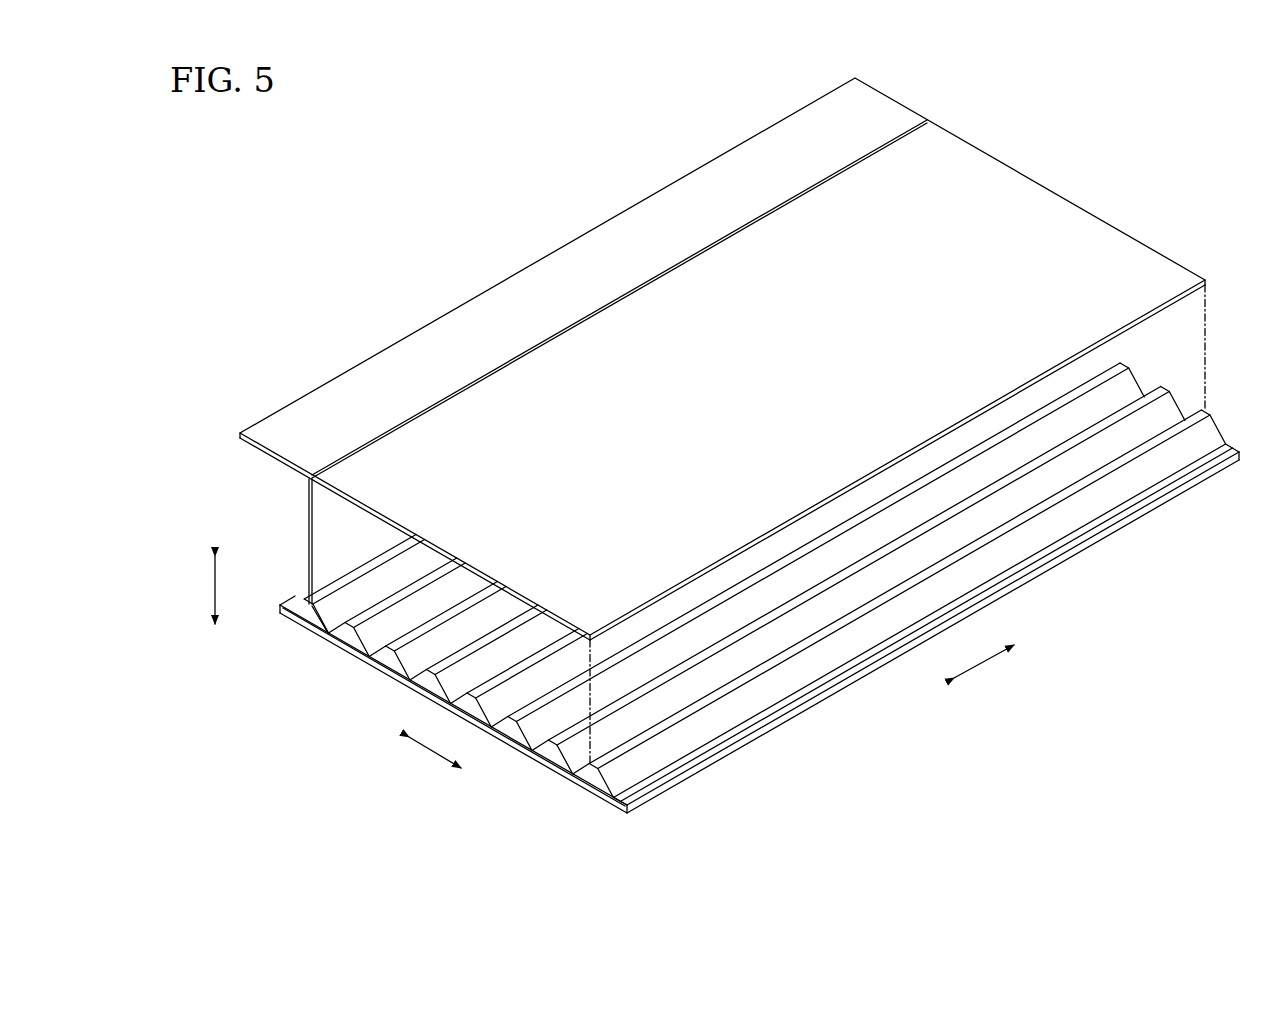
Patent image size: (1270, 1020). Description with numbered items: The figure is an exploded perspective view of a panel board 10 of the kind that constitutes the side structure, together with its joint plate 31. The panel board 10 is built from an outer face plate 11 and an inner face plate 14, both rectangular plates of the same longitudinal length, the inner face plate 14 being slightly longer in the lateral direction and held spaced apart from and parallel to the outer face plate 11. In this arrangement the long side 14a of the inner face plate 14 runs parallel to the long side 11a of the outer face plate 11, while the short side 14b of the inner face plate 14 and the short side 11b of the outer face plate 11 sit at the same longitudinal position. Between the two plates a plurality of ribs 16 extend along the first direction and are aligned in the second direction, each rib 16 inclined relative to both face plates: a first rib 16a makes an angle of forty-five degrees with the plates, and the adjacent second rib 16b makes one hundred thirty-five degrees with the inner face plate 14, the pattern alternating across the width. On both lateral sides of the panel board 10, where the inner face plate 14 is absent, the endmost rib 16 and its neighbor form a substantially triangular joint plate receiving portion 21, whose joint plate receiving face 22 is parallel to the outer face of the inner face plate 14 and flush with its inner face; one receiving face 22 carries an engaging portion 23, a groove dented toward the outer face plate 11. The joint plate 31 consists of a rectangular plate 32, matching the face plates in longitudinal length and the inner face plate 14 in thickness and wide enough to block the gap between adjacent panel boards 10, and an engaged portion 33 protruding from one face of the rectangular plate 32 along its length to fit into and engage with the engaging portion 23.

The panel board 10 is at (1106, 182).
The outer face plate 11 is at (975, 163).
The long side of the outer face plate 11a is at (1003, 400).
The short side of the outer face plate 11b is at (425, 548).
The inner face plate 14 is at (1172, 500).
The long side of the inner face plate 14a is at (848, 690).
The short side of the inner face plate 14b is at (505, 748).
The rib 16 is at (556, 770).
The first rib 16a is at (365, 652).
The second rib 16b is at (343, 633).
The joint plate receiving portion 21 is at (177, 455).
The joint plate receiving face 22 is at (360, 553).
The engaging portion 23 is at (297, 597).
The joint plate 31 is at (177, 347).
The rectangular plate 32 is at (305, 405).
The engaged portion 33 is at (312, 478).